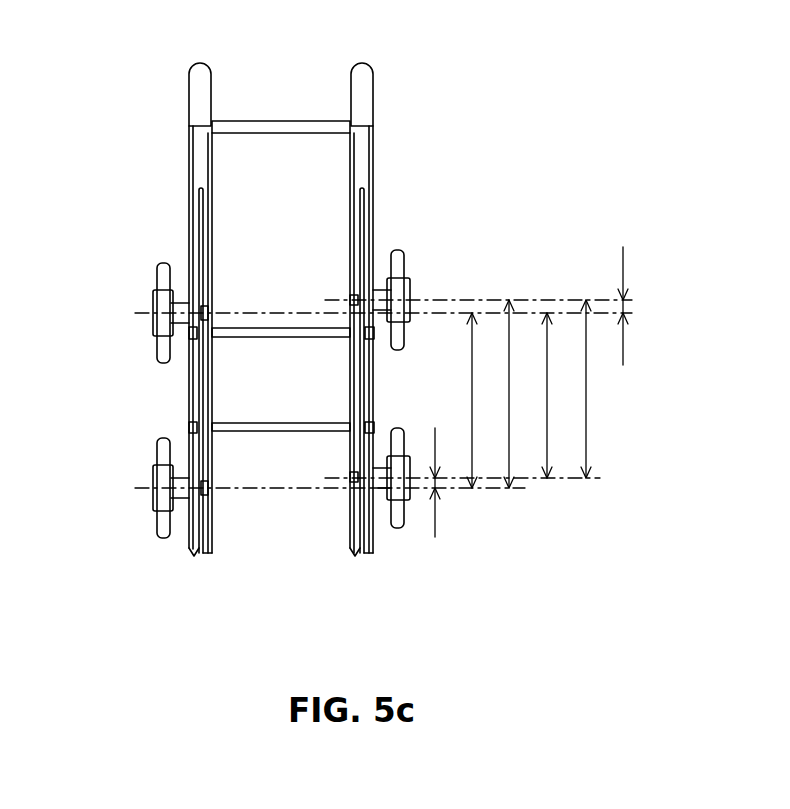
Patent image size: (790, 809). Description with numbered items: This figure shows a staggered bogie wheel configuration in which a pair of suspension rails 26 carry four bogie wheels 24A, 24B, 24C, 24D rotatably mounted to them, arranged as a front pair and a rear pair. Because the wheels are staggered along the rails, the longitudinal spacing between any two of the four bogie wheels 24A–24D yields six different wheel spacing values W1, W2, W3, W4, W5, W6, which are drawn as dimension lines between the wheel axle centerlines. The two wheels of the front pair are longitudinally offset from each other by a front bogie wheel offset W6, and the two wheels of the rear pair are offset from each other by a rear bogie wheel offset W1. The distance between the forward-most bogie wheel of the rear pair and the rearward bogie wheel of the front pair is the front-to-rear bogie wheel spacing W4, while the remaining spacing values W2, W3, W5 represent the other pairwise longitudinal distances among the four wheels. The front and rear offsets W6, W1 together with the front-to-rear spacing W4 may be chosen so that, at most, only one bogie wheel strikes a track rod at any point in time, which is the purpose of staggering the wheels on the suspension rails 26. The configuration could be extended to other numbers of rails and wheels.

The suspension rails 26 is at (351, 74).
The bogie wheel 24A is at (398, 249).
The bogie wheel 24B is at (157, 342).
The bogie wheel 24C is at (398, 529).
The bogie wheel 24D is at (157, 517).
The rear bogie wheel offset W1 is at (435, 522).
The wheel spacing value W2 is at (472, 405).
The wheel spacing value W3 is at (509, 345).
The front-to-rear bogie wheel spacing W4 is at (547, 348).
The wheel spacing value W5 is at (586, 428).
The front bogie wheel offset W6 is at (623, 275).